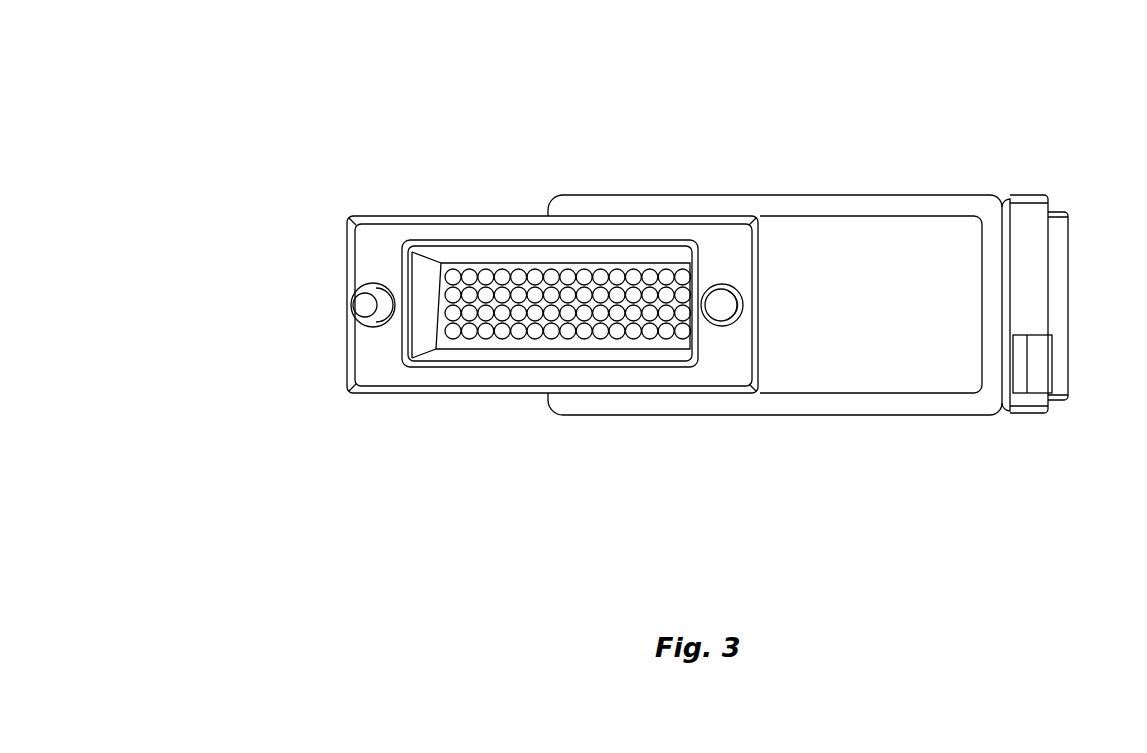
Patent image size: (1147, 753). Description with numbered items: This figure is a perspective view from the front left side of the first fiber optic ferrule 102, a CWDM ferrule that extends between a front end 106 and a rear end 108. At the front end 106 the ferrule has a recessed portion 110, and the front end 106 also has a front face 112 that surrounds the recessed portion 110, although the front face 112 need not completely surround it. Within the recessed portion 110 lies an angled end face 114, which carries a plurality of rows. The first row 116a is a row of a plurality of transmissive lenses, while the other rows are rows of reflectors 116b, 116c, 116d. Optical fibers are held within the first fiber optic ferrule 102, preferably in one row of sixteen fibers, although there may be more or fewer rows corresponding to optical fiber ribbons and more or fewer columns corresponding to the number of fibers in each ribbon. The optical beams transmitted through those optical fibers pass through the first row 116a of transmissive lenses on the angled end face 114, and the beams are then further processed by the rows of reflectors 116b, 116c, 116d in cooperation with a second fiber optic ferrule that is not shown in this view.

The first fiber optic ferrule 102 is at (854, 156).
The front end 106 is at (278, 268).
The rear end 108 is at (1096, 226).
The recessed portion 110 is at (617, 348).
The front face 112 is at (727, 368).
The angled end face 114 is at (560, 268).
The first row of transmissive lenses 116a is at (455, 270).
The row of reflectors 116b is at (450, 295).
The row of reflectors 116c is at (470, 318).
The row of reflectors 116d is at (502, 336).